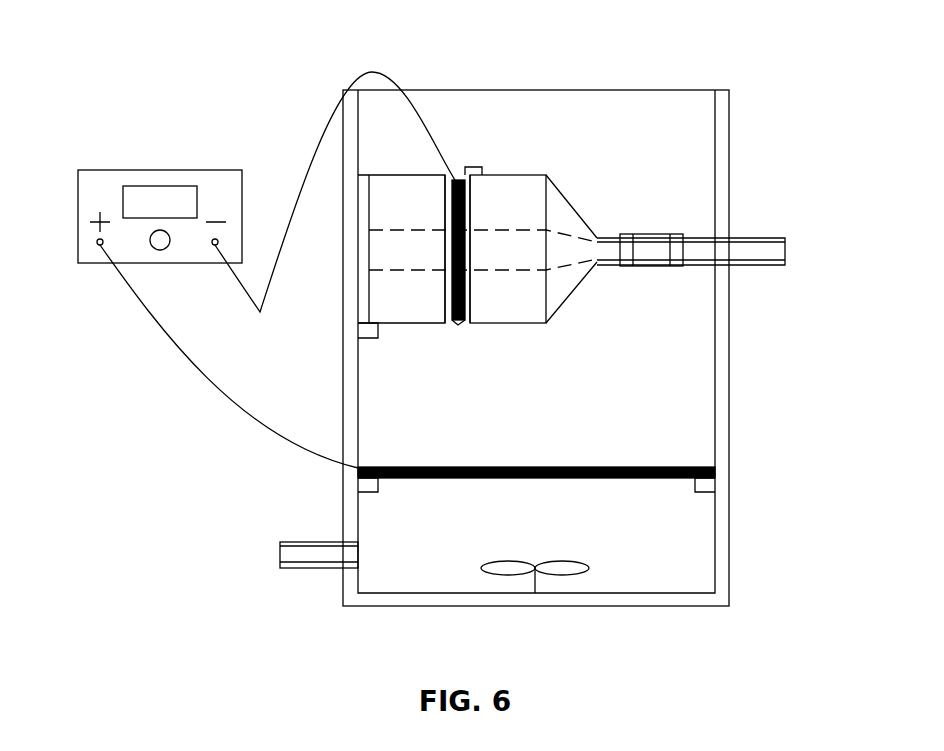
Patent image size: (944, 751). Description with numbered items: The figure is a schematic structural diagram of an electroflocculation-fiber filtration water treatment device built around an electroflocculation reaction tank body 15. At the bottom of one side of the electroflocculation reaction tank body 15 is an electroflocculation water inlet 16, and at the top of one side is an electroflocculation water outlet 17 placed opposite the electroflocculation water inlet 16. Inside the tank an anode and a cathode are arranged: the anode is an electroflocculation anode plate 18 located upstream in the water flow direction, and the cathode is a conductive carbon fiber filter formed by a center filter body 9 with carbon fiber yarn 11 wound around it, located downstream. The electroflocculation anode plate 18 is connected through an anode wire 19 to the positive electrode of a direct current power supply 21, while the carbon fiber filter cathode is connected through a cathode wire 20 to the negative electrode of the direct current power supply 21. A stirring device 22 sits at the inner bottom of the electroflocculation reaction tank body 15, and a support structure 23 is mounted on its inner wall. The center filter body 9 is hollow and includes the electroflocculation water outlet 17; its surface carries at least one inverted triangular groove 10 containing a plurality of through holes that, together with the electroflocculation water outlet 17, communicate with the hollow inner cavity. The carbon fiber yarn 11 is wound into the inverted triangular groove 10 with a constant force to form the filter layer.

The center filter body 9 is at (573, 202).
The inverted triangular groove 10 is at (452, 323).
The carbon fiber yarn 11 is at (458, 183).
The electroflocculation reaction tank body 15 is at (537, 90).
The electroflocculation water inlet 16 is at (288, 542).
The electroflocculation water outlet 17 is at (765, 238).
The electroflocculation anode plate 18 is at (537, 467).
The anode wire 19 is at (197, 400).
The cathode wire 20 is at (312, 152).
The direct current power supply 21 is at (158, 168).
The stirring device 22 is at (563, 575).
The support structure 23 is at (378, 338).